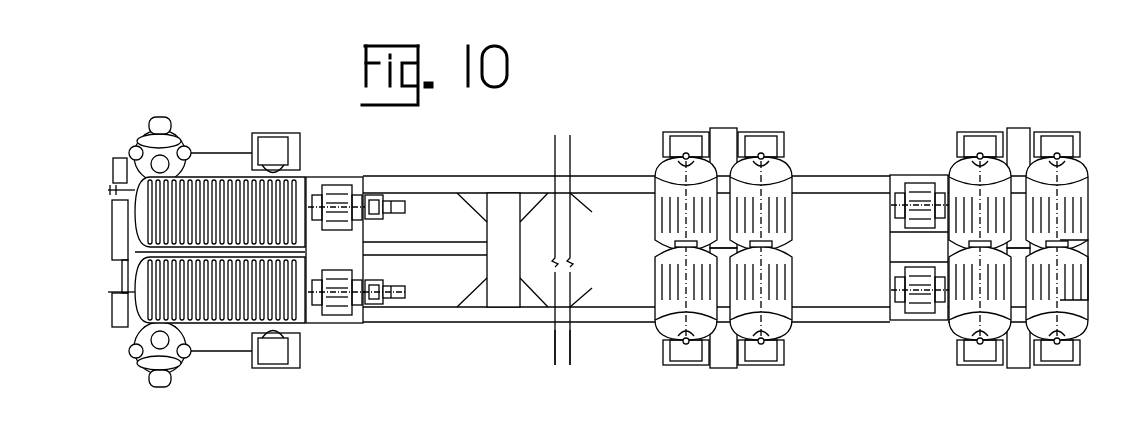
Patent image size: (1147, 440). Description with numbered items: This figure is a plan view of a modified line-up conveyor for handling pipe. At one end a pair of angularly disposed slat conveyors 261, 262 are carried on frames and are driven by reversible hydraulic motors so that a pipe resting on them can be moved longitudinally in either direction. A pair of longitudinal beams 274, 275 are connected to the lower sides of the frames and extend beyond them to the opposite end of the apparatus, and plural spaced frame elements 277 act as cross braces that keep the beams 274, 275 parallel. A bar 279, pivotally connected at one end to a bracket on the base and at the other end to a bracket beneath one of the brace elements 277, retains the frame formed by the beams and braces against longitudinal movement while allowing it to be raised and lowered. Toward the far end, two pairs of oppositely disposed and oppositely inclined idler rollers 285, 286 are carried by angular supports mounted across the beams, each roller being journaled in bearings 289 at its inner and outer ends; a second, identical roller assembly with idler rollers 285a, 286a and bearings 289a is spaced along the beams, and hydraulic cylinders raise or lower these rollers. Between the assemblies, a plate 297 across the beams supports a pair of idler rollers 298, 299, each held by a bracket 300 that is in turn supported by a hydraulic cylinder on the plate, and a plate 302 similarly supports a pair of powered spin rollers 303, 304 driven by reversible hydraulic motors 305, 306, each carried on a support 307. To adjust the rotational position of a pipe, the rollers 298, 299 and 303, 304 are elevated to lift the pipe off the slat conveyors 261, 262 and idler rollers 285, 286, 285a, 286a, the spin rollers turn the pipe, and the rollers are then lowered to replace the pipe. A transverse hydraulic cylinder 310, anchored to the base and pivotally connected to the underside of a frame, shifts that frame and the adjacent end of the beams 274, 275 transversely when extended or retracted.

The slat conveyor 261 is at (120, 294).
The slat conveyor 262 is at (112, 217).
The longitudinal beam 274 is at (552, 345).
The longitudinal beam 275 is at (577, 175).
The frame element 277 is at (527, 215).
The bar 279 is at (418, 242).
The idler roller 285 is at (1018, 345).
The idler roller 285a is at (729, 362).
The idler roller 286 is at (1016, 135).
The idler roller 286a is at (722, 160).
The bearing 289 is at (962, 168).
The bearing 289a is at (662, 165).
The plate 297 is at (880, 262).
The roller 298 is at (921, 313).
The roller 299 is at (907, 185).
The bracket 300 is at (893, 195).
The plate 302 is at (368, 266).
The roller 303 is at (338, 318).
The roller 304 is at (337, 186).
The reversible hydraulic motor 305 is at (392, 305).
The reversible hydraulic motor 306 is at (392, 196).
The support 307 is at (375, 306).
The transverse hydraulic cylinder 310 is at (1072, 254).